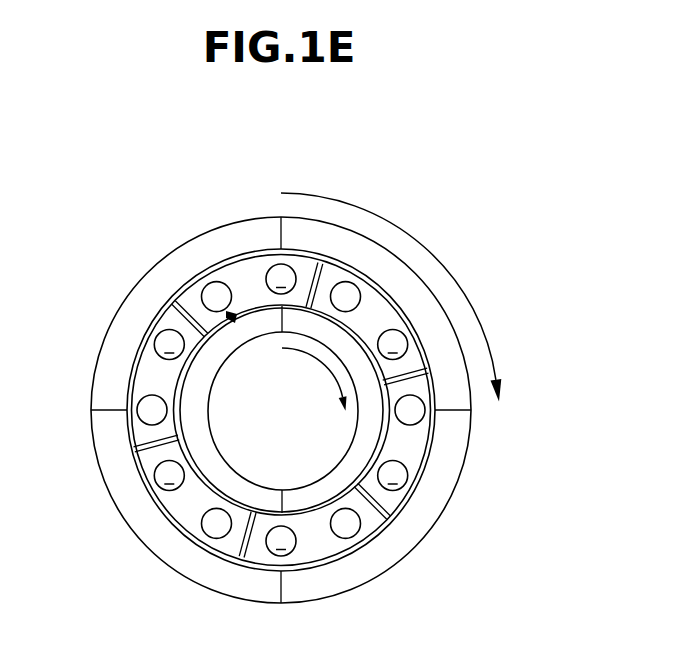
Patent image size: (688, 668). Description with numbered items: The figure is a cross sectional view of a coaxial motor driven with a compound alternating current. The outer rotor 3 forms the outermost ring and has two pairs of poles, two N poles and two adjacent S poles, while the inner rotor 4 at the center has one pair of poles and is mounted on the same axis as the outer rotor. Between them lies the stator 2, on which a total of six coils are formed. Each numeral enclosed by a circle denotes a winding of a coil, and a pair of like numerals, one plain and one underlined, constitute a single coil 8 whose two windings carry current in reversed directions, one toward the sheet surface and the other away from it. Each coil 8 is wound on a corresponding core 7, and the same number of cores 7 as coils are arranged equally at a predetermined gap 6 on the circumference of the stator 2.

The stator 2 is at (232, 319).
The outer rotor 3 is at (187, 263).
The inner rotor 4 is at (252, 502).
The gap 6 is at (170, 322).
The core 7 is at (153, 373).
The coil 8 is at (156, 477).